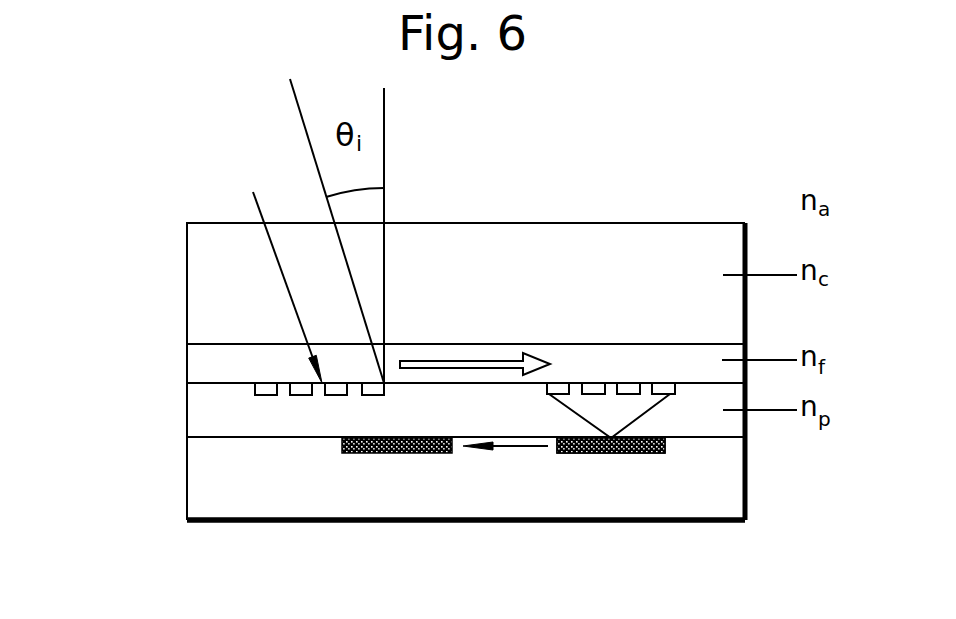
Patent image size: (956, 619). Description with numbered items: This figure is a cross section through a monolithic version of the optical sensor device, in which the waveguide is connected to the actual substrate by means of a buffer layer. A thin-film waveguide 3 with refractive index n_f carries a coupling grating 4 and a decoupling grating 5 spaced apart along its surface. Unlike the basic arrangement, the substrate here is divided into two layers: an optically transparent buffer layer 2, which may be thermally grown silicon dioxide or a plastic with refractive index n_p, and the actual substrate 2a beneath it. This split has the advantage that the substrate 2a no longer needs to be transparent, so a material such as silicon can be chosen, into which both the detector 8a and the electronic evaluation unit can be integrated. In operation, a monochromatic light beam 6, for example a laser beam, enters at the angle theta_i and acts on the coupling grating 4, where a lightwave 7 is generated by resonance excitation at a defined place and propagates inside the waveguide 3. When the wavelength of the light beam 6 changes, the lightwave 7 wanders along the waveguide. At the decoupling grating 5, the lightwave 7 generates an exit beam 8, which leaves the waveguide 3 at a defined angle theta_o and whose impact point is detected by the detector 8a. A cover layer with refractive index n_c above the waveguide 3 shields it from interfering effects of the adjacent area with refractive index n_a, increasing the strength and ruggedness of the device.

The buffer layer 2 is at (212, 417).
The substrate 2a is at (212, 473).
The waveguide 3 is at (212, 364).
The coupling grating 4 is at (317, 424).
The decoupling grating 5 is at (625, 362).
The light beam 6 is at (309, 278).
The lightwave 7 is at (482, 361).
The exit beam 8 is at (569, 412).
The detector 8a is at (647, 453).